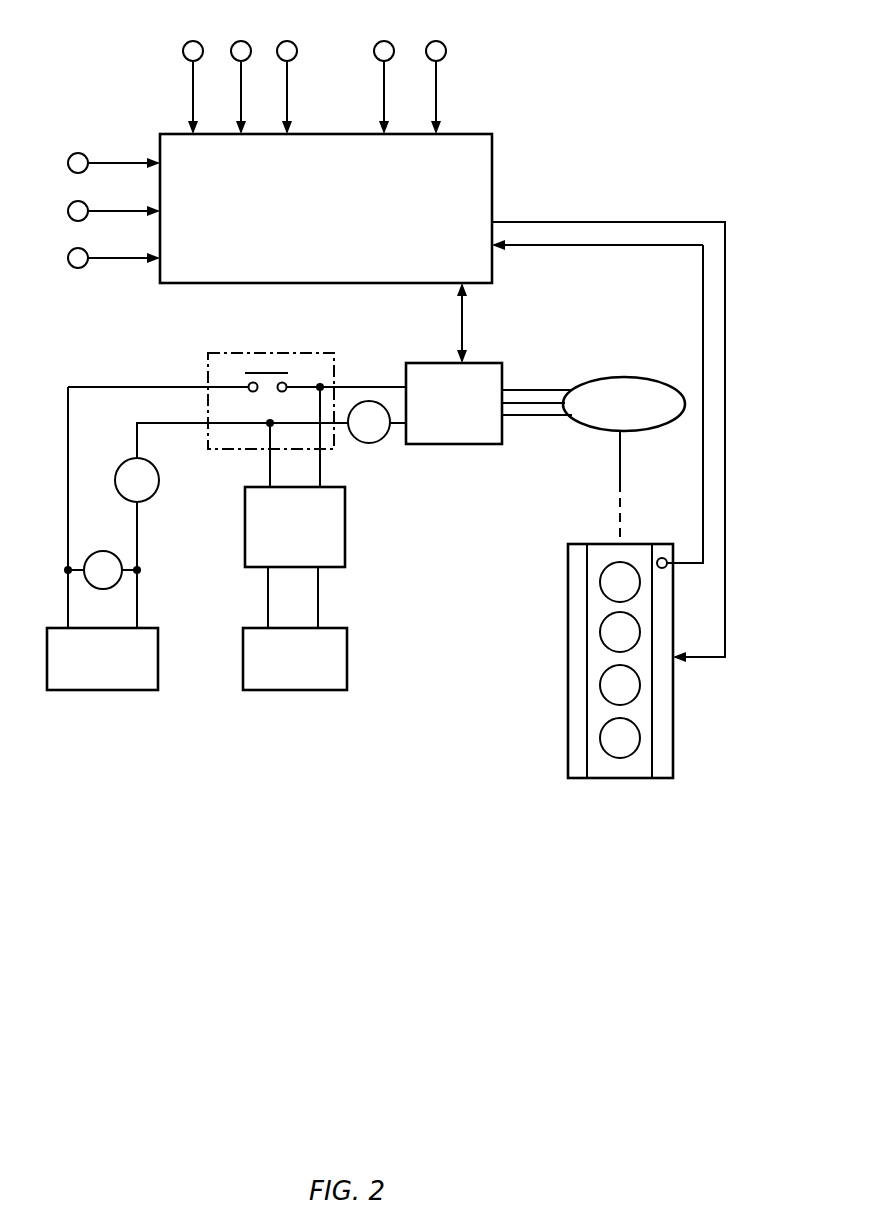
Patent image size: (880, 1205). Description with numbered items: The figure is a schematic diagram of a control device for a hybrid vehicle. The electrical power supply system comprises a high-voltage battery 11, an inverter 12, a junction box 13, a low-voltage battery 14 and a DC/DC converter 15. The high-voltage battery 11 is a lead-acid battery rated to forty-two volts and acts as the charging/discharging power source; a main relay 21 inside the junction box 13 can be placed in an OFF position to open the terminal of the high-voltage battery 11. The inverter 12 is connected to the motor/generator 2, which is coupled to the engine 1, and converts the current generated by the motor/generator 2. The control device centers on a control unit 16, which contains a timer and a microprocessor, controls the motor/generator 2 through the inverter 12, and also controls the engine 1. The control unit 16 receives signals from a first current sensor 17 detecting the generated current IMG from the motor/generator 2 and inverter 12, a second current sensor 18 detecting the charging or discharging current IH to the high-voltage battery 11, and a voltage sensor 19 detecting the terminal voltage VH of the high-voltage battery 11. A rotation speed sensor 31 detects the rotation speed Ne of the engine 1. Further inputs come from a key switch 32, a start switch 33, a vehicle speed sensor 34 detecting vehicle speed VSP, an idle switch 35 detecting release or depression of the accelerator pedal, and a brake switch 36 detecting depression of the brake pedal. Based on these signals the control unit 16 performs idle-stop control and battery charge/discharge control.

The engine 1 is at (673, 738).
The motor/generator 2 is at (645, 379).
The high-voltage battery 11 is at (158, 658).
The inverter 12 is at (482, 445).
The junction box 13 is at (238, 352).
The low-voltage battery 14 is at (303, 691).
The DC/DC converter 15 is at (347, 547).
The control unit 16 is at (492, 180).
The first current sensor 17 is at (400, 487).
The second current sensor 18 is at (186, 492).
The voltage sensor 19 is at (182, 561).
The main relay 21 is at (283, 370).
The rotation speed sensor 31 is at (663, 557).
The key switch 32 is at (193, 69).
The start switch 33 is at (241, 69).
The vehicle speed sensor 34 is at (308, 69).
The idle switch 35 is at (384, 69).
The brake switch 36 is at (436, 69).